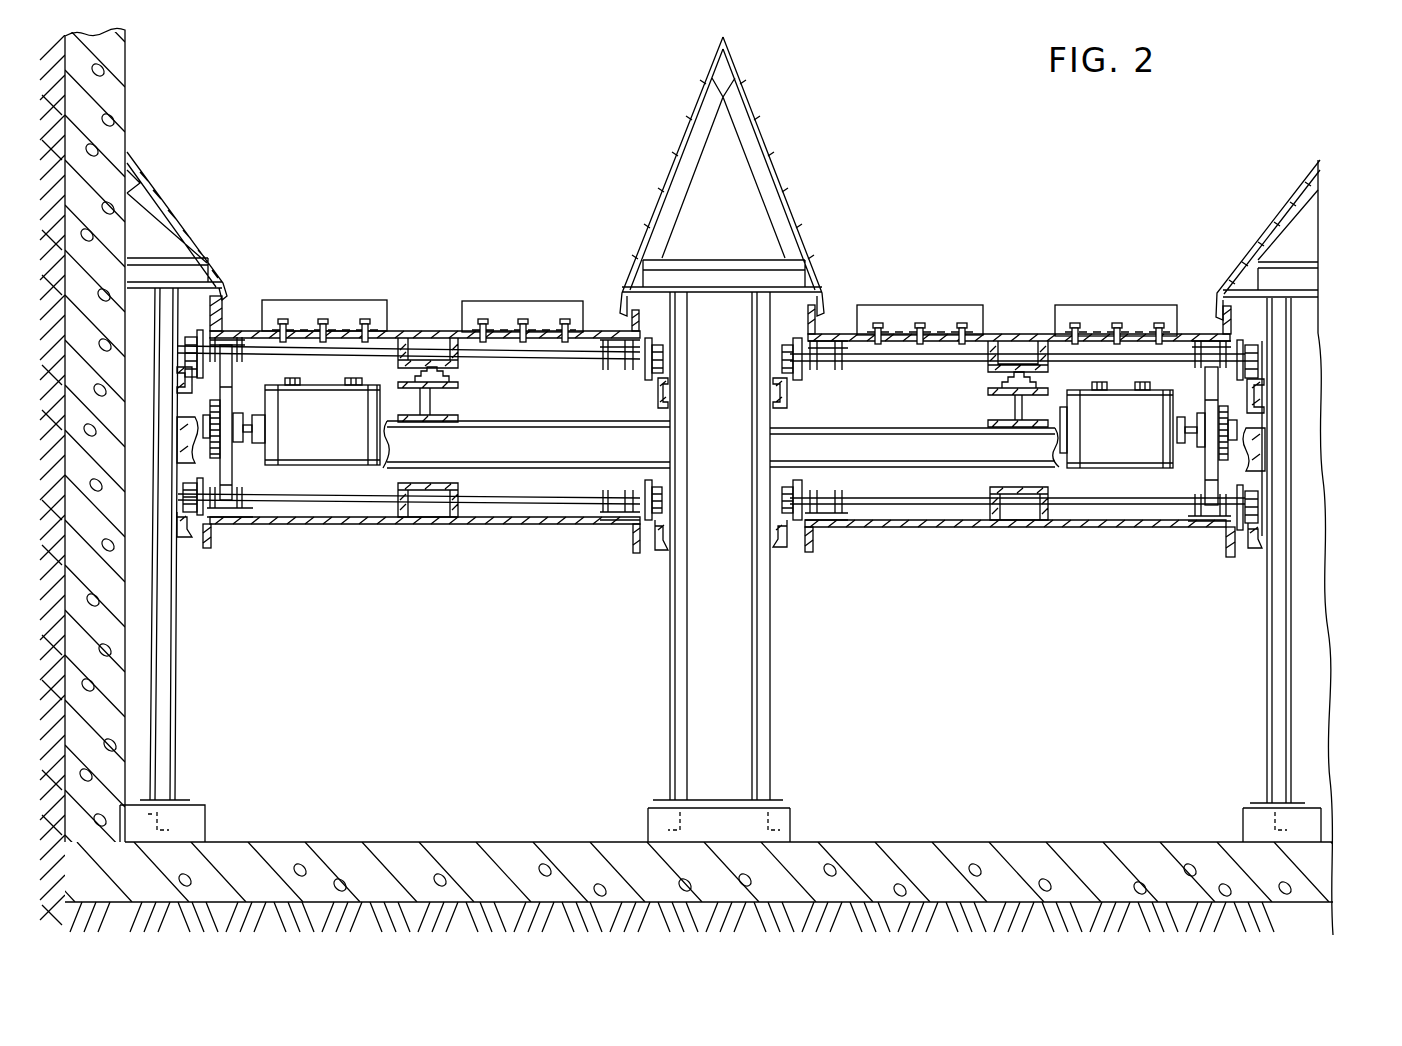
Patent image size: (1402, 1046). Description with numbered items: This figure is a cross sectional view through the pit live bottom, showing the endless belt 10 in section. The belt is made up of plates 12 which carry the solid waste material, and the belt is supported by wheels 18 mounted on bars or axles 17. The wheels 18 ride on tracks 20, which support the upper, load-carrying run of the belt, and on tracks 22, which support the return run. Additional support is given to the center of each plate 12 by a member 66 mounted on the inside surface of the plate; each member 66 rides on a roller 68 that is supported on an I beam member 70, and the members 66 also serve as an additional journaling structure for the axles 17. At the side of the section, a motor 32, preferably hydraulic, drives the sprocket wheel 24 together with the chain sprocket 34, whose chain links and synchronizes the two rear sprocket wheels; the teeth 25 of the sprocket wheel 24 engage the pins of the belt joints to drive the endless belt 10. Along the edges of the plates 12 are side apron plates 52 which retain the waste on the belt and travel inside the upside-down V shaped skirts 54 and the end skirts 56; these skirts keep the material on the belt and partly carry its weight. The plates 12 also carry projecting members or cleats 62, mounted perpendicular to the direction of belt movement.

The endless belt 10 is at (1013, 306).
The plates 12 is at (838, 332).
The axles 17 is at (858, 356).
The wheels 18 is at (800, 380).
The tracks 20 is at (1262, 401).
The tracks 22 is at (778, 537).
The sprocket wheel 24 is at (1240, 475).
The teeth 25 is at (1205, 462).
The motor 32 is at (1117, 468).
The chain sprocket 34 is at (1243, 408).
The side apron plates 52 is at (813, 540).
The skirts 54 is at (811, 248).
The end skirts 56 is at (208, 258).
The cleats 62 is at (530, 301).
The members 66 is at (994, 365).
The rollers 68 is at (1001, 380).
The I beam members 70 is at (1013, 410).